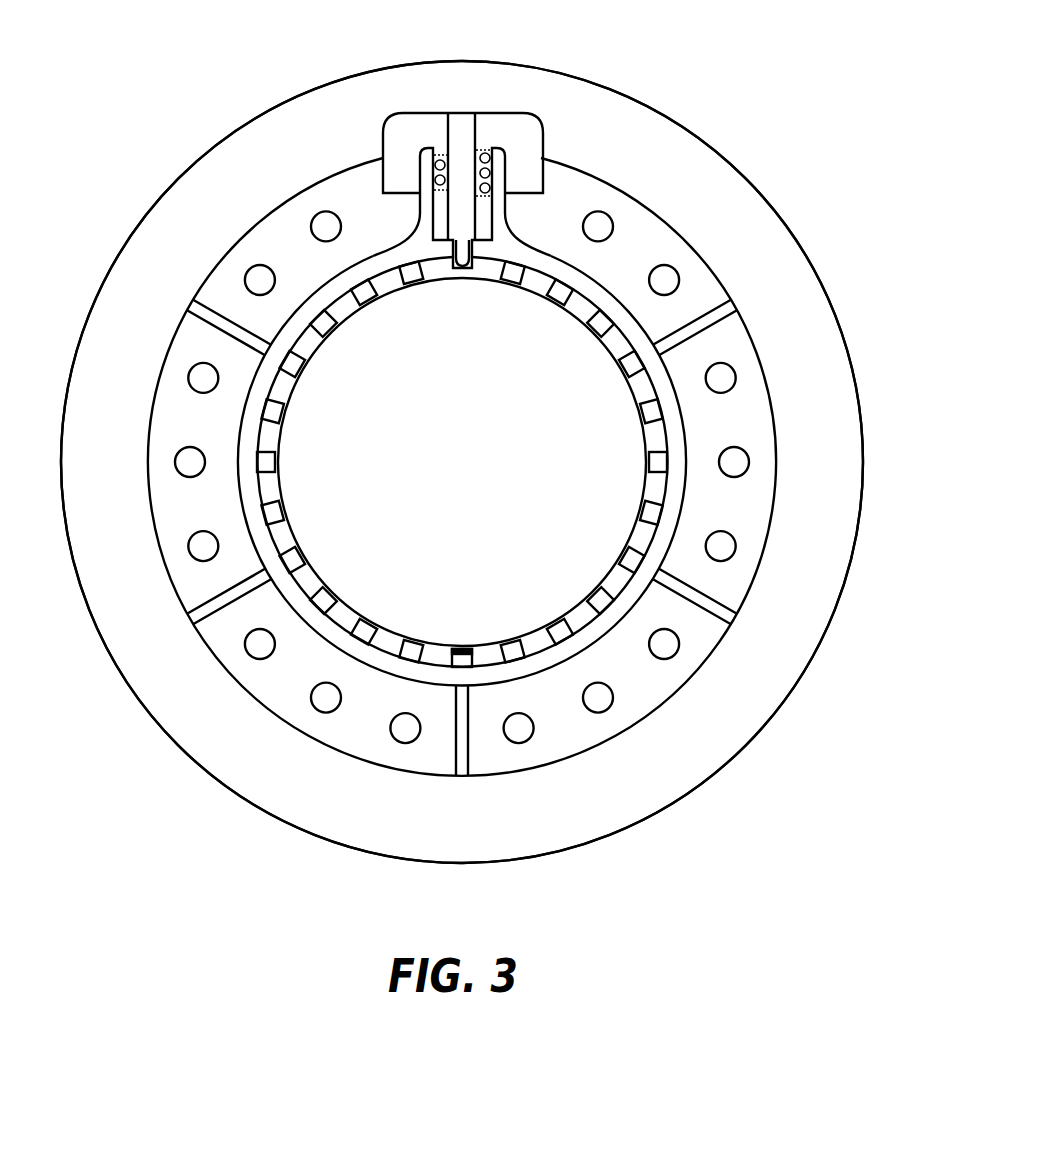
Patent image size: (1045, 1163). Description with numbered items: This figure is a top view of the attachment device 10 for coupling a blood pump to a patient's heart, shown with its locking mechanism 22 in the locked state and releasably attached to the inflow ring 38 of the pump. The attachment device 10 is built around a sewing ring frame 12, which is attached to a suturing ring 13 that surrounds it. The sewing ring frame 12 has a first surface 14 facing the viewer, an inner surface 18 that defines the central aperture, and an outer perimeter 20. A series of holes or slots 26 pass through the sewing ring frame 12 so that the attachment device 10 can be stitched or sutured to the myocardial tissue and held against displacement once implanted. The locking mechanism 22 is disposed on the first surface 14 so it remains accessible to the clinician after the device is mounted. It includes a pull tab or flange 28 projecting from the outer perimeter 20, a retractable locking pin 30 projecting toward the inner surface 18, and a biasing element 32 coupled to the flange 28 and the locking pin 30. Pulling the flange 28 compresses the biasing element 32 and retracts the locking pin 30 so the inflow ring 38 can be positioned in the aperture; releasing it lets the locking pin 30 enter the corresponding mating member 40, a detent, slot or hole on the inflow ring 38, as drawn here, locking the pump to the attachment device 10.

The attachment device 10 is at (750, 68).
The sewing ring frame 12 is at (777, 418).
The suturing ring 13 is at (780, 300).
The first surface 14 is at (753, 535).
The inner surface 18 is at (288, 333).
The outer perimeter 20 is at (175, 593).
The locking mechanism 22 is at (439, 112).
The hole or slot 26 is at (612, 221).
The flange 28 is at (420, 127).
The locking pin 30 is at (461, 121).
The biasing element 32 is at (437, 182).
The inflow ring 38 is at (268, 433).
The corresponding mating member 40 is at (557, 298).